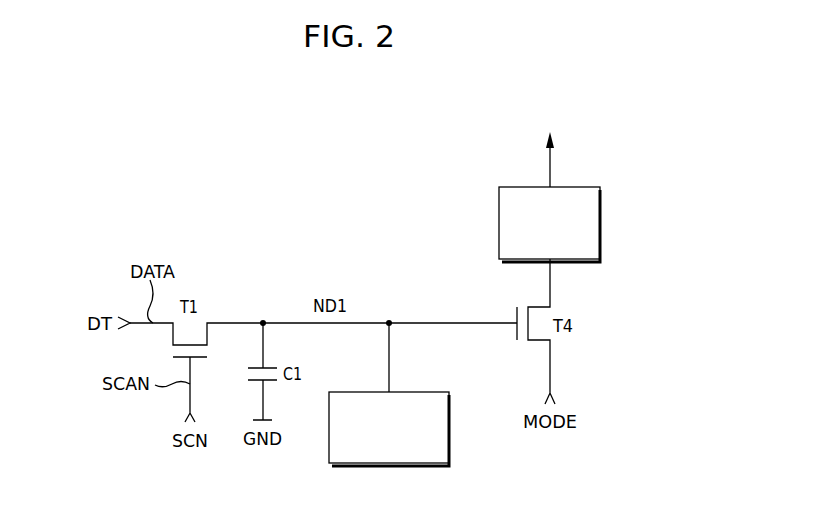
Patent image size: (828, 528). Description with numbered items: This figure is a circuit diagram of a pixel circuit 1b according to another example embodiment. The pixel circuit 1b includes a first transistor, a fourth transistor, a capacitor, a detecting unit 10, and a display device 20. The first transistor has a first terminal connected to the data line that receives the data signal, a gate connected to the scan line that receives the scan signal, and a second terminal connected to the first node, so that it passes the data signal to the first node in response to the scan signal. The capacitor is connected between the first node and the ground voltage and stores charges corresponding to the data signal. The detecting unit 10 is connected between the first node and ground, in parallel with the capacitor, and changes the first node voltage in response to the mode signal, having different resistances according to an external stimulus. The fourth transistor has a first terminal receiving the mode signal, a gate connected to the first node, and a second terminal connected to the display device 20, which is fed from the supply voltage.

The detecting unit 10 is at (410, 390).
The display device 20 is at (575, 187).
The pixel circuit 1b is at (399, 242).